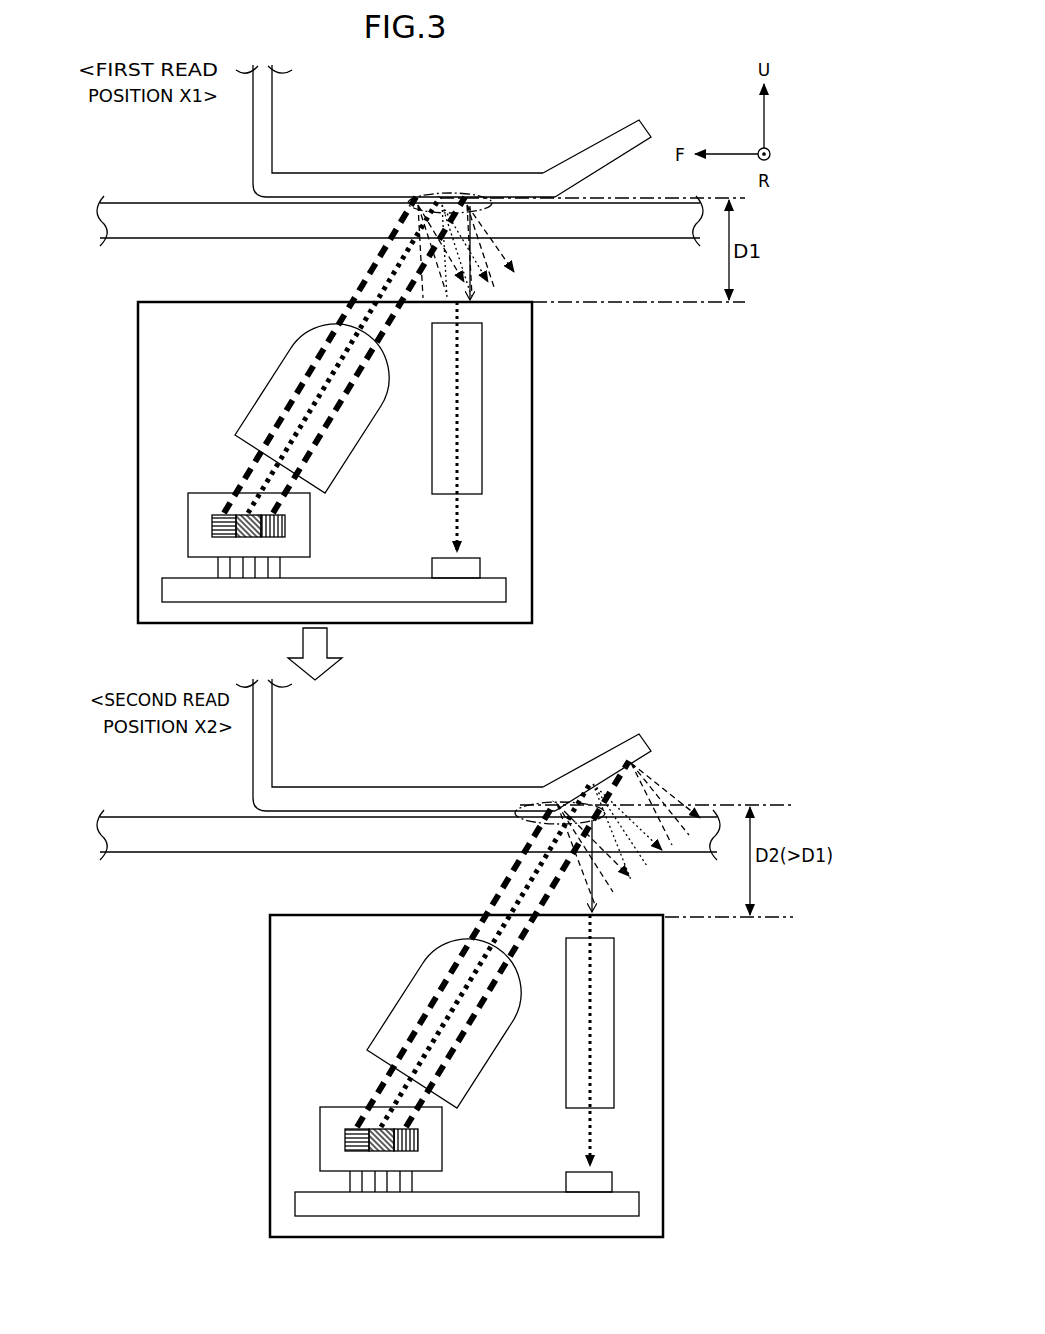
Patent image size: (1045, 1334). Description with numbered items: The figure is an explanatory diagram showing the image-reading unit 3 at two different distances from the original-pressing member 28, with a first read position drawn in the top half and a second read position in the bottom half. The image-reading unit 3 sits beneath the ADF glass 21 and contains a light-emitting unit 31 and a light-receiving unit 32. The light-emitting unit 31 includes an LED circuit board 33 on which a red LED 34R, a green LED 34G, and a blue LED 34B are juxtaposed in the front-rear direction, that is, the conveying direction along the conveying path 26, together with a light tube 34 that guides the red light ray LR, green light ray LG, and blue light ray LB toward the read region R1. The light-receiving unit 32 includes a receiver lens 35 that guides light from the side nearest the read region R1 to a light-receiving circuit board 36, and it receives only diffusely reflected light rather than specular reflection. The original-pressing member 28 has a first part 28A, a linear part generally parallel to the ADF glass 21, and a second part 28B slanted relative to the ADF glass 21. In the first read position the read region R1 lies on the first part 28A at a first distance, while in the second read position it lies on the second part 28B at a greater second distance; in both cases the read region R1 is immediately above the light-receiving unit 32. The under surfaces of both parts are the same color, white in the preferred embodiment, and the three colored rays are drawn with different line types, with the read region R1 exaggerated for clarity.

The image-reading unit 3 is at (138, 331).
The ADF glass 21 is at (180, 212).
The conveying path 26 is at (315, 195).
The original-pressing member 28 is at (409, 436).
The first part 28A is at (377, 186).
The second part 28B is at (613, 140).
The light-emitting unit 31 is at (285, 779).
The light-receiving unit 32 is at (613, 757).
The LED circuit board 33 is at (200, 523).
The light tube 34 is at (289, 779).
The blue LED 34B is at (225, 533).
The green LED 34G is at (245, 533).
The red LED 34R is at (270, 533).
The receiver lens 35 is at (470, 425).
The light-receiving circuit board 36 is at (475, 568).
The read region R1 is at (412, 208).
The blue light ray LB is at (430, 200).
The green light ray LG is at (448, 198).
The red light ray LR is at (472, 202).